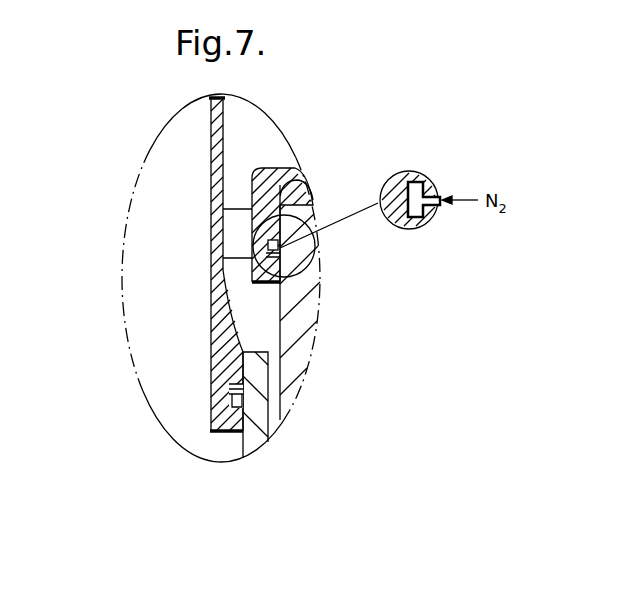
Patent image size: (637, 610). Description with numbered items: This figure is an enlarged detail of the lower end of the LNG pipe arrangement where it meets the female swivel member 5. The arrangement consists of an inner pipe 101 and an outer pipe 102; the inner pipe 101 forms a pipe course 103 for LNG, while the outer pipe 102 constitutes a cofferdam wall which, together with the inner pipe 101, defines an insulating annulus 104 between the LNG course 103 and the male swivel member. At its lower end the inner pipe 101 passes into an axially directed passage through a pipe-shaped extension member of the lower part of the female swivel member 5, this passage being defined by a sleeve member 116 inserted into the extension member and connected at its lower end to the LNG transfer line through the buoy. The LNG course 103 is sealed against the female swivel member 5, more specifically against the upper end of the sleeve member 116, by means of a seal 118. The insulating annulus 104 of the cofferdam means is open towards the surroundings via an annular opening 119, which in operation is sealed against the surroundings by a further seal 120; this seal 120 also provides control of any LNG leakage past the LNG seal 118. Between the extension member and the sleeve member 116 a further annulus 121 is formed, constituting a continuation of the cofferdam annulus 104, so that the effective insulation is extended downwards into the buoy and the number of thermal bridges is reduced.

The female swivel member 5 is at (293, 340).
The inner pipe 101 is at (213, 138).
The outer pipe 102 is at (290, 198).
The pipe course 103 is at (137, 250).
The insulating annulus 104 is at (257, 130).
The sleeve member 116 is at (254, 431).
The seal 118 is at (242, 395).
The annular opening 119 is at (238, 278).
The seal 120 is at (283, 250).
The annulus 121 is at (270, 410).